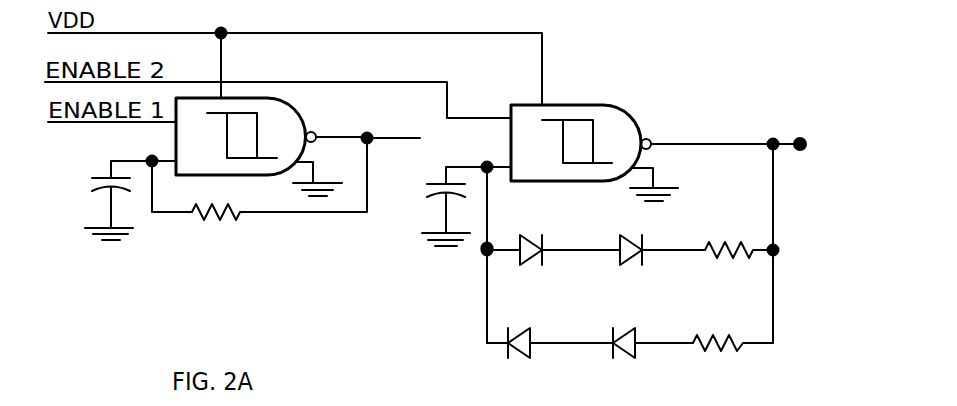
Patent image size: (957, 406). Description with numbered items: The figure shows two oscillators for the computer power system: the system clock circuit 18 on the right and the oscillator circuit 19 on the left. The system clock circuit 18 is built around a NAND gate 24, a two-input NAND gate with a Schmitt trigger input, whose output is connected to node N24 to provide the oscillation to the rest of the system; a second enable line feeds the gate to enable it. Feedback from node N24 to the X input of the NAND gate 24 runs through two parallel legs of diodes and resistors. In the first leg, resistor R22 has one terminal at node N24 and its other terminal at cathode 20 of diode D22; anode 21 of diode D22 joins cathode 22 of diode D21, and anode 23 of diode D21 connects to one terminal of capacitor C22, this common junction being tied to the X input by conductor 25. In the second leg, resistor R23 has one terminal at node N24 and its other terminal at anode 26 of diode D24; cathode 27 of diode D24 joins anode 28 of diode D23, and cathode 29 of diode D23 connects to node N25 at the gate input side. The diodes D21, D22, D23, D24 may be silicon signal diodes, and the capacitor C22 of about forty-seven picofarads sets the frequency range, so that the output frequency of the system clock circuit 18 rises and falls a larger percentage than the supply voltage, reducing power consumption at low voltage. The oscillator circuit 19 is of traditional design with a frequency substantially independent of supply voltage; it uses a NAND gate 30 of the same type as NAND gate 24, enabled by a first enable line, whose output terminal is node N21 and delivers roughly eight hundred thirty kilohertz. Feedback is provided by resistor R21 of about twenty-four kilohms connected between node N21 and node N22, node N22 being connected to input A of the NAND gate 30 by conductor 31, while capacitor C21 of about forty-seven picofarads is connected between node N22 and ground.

The system clock circuit 18 is at (590, 83).
The oscillator circuit 19 is at (272, 219).
The cathode of diode D22 20 is at (643, 264).
The anode of diode D22 21 is at (618, 258).
The cathode of diode D21 22 is at (543, 264).
The anode of diode D21 23 is at (522, 258).
The NAND gate 24 is at (639, 127).
The conductor 25 is at (504, 166).
The anode of diode D24 26 is at (637, 350).
The cathode of diode D24 27 is at (612, 353).
The anode of diode D23 28 is at (531, 352).
The cathode of diode D23 29 is at (505, 357).
The NAND gate 30 is at (304, 124).
The conductor 31 is at (163, 157).
The node N21 is at (370, 137).
The node N22 is at (150, 161).
The node N24 is at (773, 139).
The node N25 is at (487, 166).
The capacitor C21 is at (102, 200).
The capacitor C22 is at (436, 206).
The resistor R21 is at (259, 179).
The resistor R22 is at (742, 238).
The resistor R23 is at (733, 331).
The diode D21 is at (538, 255).
The diode D22 is at (641, 258).
The diode D23 is at (503, 356).
The diode D24 is at (627, 351).